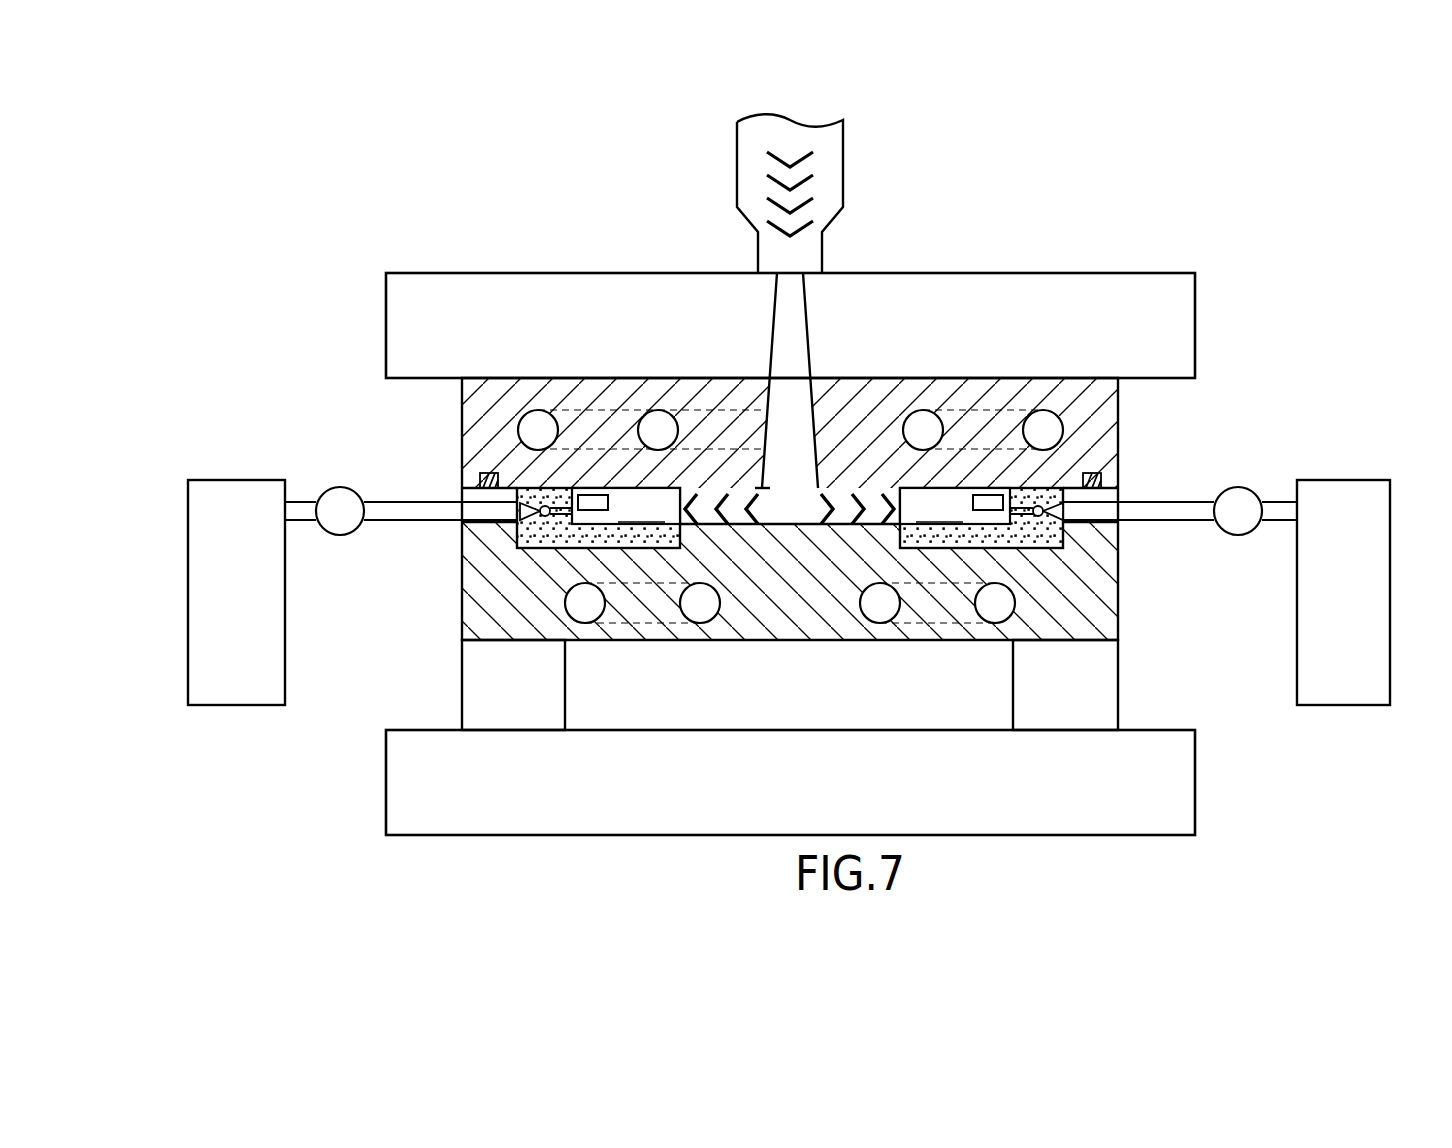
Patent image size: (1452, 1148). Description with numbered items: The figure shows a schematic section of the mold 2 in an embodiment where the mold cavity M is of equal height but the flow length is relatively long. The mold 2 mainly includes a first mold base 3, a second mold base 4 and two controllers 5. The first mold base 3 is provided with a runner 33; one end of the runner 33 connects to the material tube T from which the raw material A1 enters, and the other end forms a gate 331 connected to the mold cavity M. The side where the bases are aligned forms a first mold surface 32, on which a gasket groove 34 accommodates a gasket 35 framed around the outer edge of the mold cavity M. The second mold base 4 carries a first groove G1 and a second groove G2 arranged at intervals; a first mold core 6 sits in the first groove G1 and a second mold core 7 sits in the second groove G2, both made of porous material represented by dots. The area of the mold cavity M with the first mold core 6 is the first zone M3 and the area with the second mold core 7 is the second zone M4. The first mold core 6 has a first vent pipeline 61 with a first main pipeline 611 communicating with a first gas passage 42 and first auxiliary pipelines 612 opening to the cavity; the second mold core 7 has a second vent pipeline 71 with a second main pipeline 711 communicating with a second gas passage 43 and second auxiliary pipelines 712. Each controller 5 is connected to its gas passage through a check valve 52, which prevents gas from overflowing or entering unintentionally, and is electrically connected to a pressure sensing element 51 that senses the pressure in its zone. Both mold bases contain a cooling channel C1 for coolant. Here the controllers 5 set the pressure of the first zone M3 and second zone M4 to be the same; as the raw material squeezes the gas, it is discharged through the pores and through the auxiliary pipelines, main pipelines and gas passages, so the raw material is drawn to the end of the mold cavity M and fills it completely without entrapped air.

The mold 2 is at (206, 170).
The first mold base 3 is at (491, 397).
The first mold surface 32 is at (560, 490).
The runner 33 is at (793, 447).
The sprue outlet 331 is at (762, 487).
The gasket groove 34 is at (1084, 458).
The gasket 35 is at (1101, 479).
The second mold base 4 is at (505, 617).
The first gas passage 42 is at (484, 511).
The second gas passage 43 is at (1088, 514).
The controller 5 is at (188, 581).
The pressure sensing element 51 is at (594, 494).
The check valve 52 is at (330, 492).
The first mold core 6 is at (543, 550).
The first vent pipeline 61 is at (449, 453).
The first main pipeline 611 is at (518, 504).
The first auxiliary pipeline 612 is at (547, 505).
The second mold core 7 is at (962, 545).
The second vent pipeline 71 is at (1144, 575).
The second main pipeline 711 is at (1033, 544).
The second auxiliary pipeline 712 is at (1017, 603).
The material tube T is at (737, 170).
The molding material A1 is at (802, 232).
The mold cavity M is at (814, 503).
The cooling channel C1 is at (1046, 412).
The first groove G1 is at (637, 549).
The second groove G2 is at (925, 550).
The first zone M3 is at (626, 506).
The second zone M4 is at (955, 506).